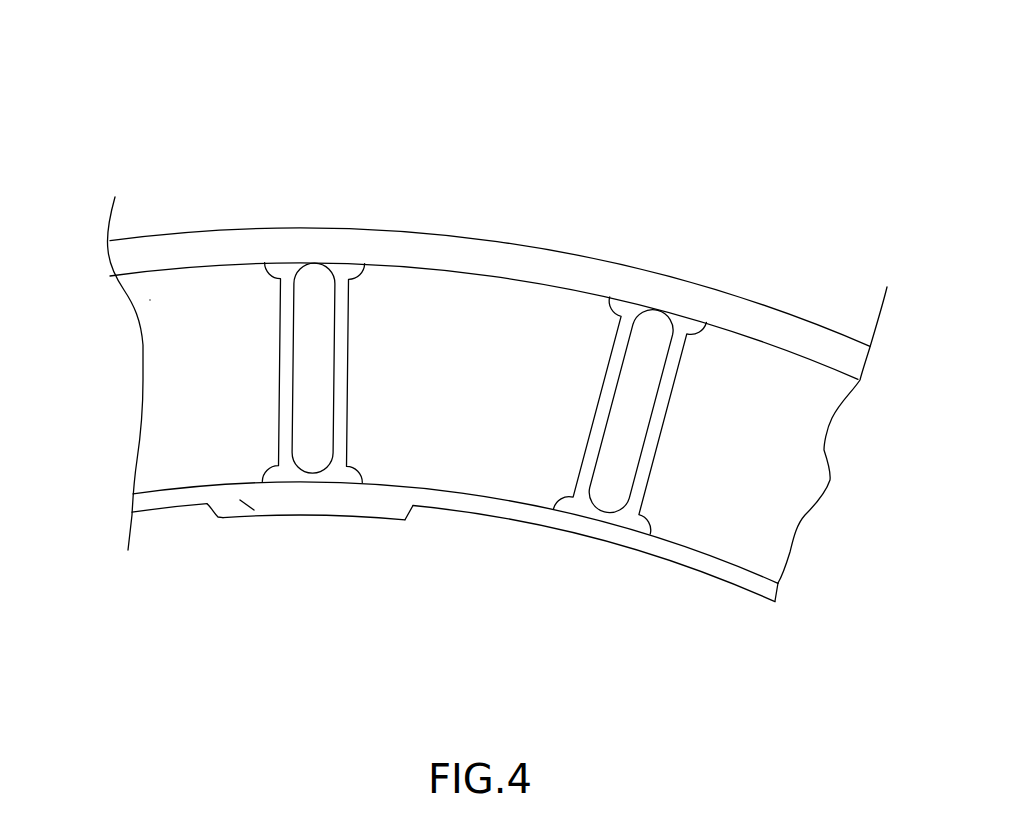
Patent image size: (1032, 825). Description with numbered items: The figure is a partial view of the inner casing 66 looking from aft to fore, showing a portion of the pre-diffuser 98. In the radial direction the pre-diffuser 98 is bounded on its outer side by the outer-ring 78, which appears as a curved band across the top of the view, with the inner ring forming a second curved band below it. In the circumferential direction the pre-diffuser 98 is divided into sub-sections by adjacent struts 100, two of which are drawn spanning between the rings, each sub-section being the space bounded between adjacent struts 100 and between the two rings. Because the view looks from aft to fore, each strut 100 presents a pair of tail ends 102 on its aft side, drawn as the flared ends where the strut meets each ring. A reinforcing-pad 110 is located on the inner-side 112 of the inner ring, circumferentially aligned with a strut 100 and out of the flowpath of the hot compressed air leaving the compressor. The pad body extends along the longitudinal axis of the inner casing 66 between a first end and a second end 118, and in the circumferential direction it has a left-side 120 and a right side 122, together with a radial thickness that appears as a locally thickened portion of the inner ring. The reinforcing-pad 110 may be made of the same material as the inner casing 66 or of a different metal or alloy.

The inner casing 66 is at (441, 100).
The outer-ring 78 is at (493, 260).
The pre-diffuser 98 is at (186, 297).
The strut 100 is at (342, 465).
The tail end 102 is at (283, 278).
The reinforcing-pad 110 is at (387, 502).
The inner-side 112 is at (475, 513).
The second end 118 is at (247, 505).
The left-side 120 is at (220, 517).
The right side 122 is at (417, 512).